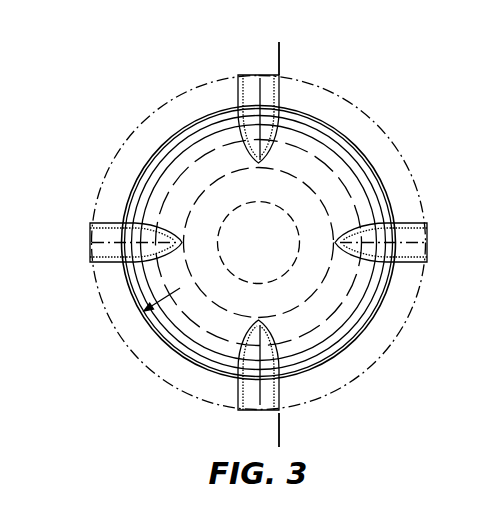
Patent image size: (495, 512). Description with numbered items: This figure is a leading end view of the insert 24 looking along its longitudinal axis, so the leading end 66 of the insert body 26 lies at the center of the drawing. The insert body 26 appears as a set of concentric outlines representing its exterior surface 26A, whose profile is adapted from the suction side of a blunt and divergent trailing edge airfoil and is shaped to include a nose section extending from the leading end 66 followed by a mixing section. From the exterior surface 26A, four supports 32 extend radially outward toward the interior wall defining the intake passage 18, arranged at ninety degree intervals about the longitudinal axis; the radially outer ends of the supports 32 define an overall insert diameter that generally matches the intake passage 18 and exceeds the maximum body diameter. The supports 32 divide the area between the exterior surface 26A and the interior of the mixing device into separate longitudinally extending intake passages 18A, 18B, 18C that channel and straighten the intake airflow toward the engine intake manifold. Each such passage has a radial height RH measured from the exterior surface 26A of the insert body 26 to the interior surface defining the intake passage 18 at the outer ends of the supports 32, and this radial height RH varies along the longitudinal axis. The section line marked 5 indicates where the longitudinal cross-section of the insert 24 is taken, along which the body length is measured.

The intake passage 18 is at (108, 172).
The longitudinally-extending intake passage 18A is at (163, 92).
The longitudinally-extending intake passage 18B is at (351, 92).
The longitudinally-extending intake passage 18C is at (152, 377).
The insert 24 is at (419, 115).
The radial height RH is at (105, 334).
The insert body 26 is at (317, 352).
The exterior surface 26A is at (359, 352).
The supports 32 is at (257, 86).
The leading end 66 is at (270, 250).
The section line 5- 5 is at (291, 55).